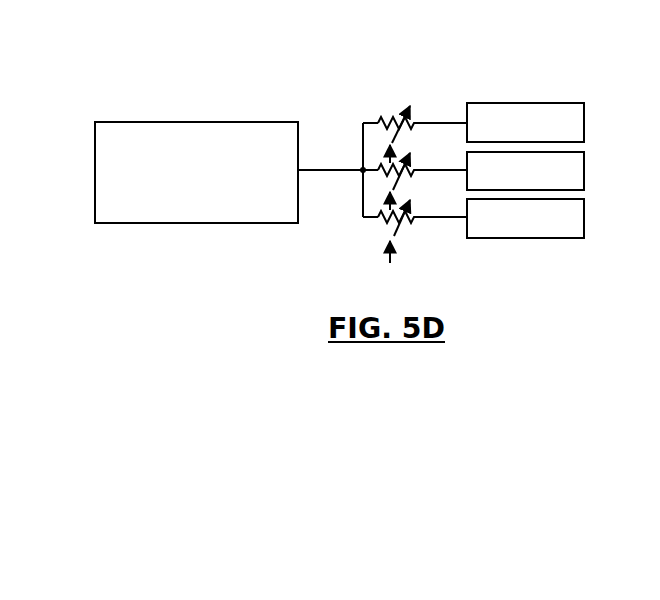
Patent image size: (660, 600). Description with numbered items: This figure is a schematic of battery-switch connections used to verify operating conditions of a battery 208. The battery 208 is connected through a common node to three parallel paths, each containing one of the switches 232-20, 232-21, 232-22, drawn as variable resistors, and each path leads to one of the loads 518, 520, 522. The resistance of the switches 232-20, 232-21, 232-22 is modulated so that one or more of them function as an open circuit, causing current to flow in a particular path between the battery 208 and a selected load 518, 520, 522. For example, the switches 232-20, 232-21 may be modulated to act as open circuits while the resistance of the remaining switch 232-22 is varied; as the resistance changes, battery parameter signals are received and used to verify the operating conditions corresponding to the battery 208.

The battery 208 is at (150, 122).
The switch 232-20 is at (409, 104).
The switch 232-21 is at (383, 168).
The switch 232-22 is at (396, 236).
The load 518 is at (528, 103).
The load 520 is at (584, 170).
The load 522 is at (520, 238).